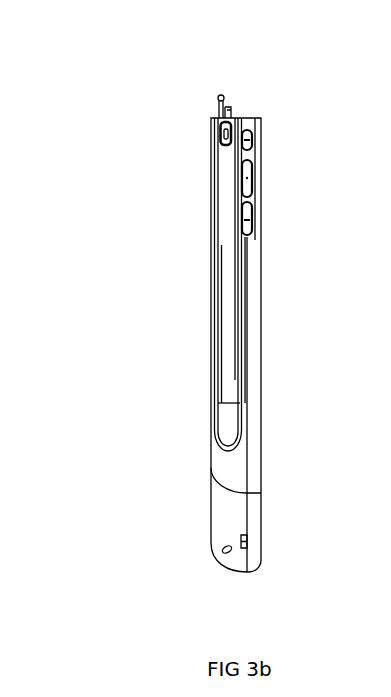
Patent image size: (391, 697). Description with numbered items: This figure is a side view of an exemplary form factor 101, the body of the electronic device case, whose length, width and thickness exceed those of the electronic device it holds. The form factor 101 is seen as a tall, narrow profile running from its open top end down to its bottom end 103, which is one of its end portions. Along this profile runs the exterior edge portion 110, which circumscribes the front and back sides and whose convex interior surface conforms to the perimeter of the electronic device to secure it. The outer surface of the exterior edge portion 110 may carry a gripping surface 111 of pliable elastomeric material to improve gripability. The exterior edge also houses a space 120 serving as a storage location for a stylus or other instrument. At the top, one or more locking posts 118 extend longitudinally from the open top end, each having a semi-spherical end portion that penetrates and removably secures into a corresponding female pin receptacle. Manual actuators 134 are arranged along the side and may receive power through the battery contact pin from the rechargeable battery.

The form factor 101 is at (183, 319).
The bottom end 103 is at (240, 572).
The exterior edge portion 110 is at (222, 458).
The gripping surface 111 is at (230, 305).
The locking post 118 is at (208, 98).
The space 120 is at (222, 552).
The manual actuators 134 is at (245, 212).